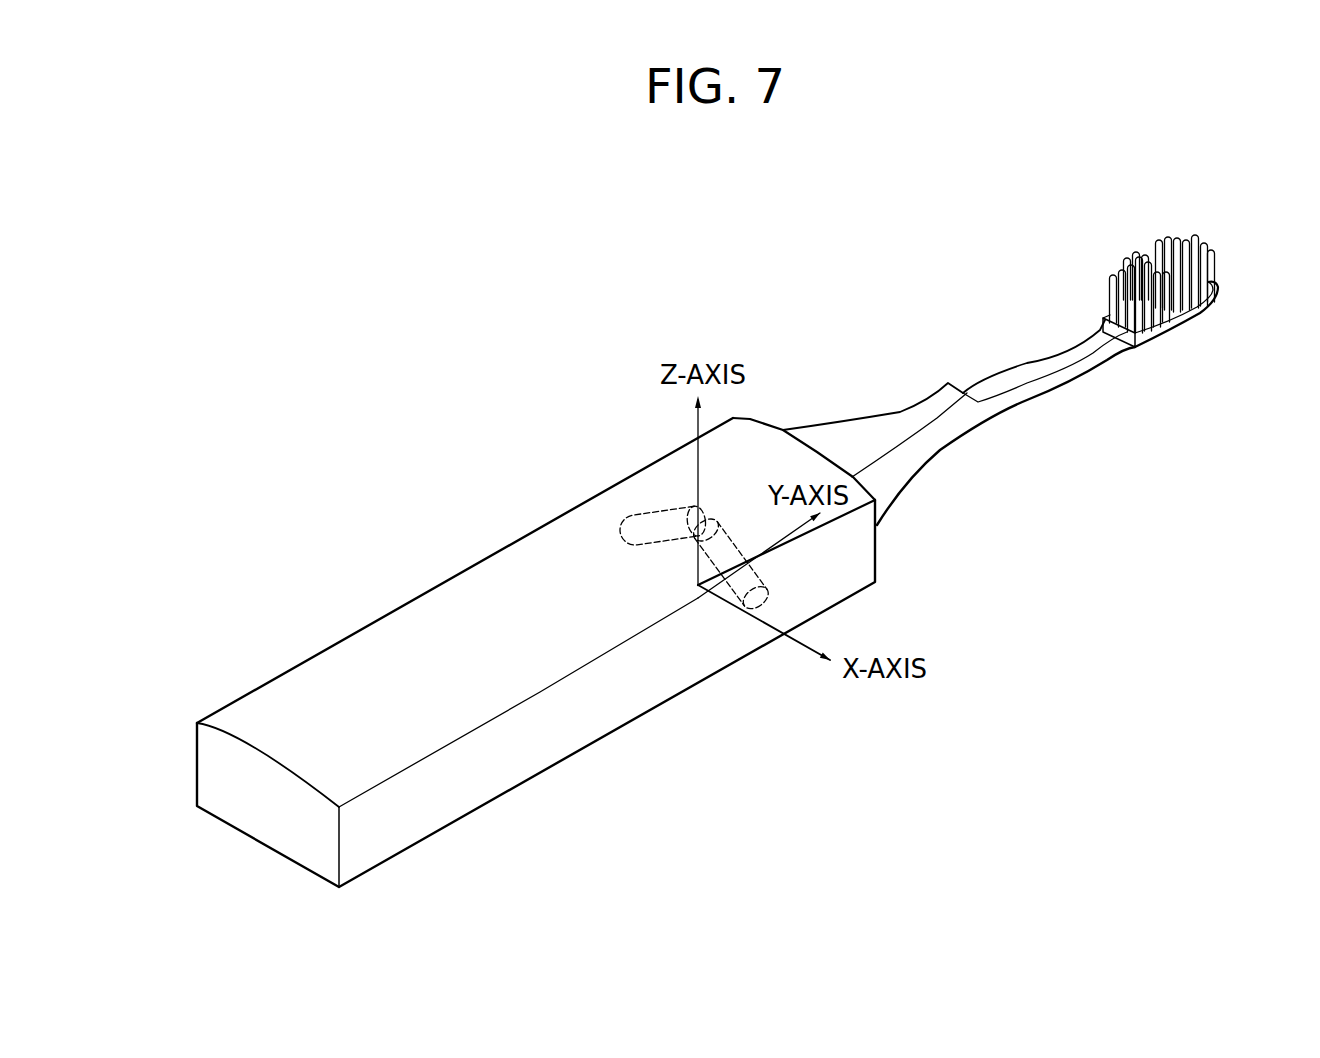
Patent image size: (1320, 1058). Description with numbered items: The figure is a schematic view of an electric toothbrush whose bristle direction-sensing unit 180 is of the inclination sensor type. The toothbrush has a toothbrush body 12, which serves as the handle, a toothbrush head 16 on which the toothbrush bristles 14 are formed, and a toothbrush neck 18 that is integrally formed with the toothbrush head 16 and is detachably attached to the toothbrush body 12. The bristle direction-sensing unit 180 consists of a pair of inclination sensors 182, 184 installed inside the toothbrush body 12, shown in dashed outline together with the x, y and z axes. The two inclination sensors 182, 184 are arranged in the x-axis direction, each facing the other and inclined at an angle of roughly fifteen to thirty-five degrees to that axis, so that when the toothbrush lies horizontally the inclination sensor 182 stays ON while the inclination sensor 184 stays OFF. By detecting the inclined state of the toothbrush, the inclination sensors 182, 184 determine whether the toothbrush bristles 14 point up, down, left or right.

The toothbrush body 12 is at (205, 769).
The toothbrush bristles 14 is at (1208, 252).
The toothbrush head 16 is at (1222, 308).
The toothbrush neck 18 is at (952, 437).
The bristle direction-sensing unit 180 is at (623, 478).
The inclination sensor 182 is at (650, 513).
The inclination sensor 184 is at (721, 527).